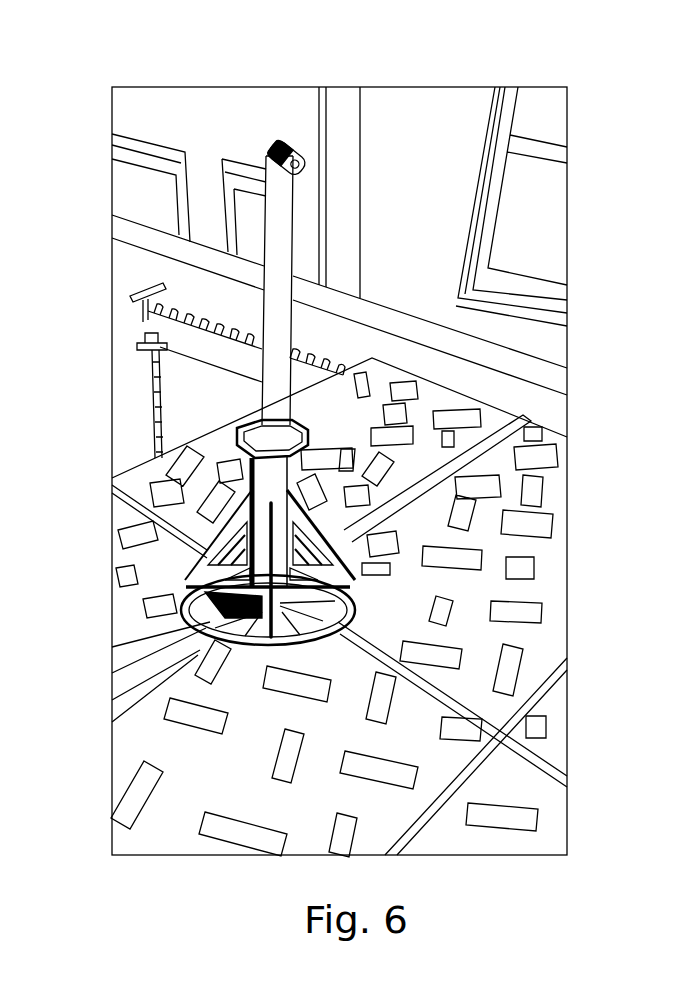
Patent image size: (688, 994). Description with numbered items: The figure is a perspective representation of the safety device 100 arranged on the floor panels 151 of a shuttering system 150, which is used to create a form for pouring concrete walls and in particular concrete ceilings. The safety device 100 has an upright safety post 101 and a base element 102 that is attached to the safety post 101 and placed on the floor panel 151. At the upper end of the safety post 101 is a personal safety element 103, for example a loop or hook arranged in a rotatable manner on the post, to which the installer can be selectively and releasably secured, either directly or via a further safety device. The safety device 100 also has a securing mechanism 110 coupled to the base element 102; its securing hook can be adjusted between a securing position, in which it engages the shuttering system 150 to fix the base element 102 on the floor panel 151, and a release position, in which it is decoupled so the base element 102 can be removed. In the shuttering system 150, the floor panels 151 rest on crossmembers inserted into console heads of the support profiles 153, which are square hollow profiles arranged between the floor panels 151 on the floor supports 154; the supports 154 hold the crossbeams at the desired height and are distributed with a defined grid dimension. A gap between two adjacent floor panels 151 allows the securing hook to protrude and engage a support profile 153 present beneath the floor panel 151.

The safety device 100 is at (333, 301).
The safety post 101 is at (280, 246).
The base element 102 is at (132, 646).
The personal safety element 103 is at (290, 146).
The securing mechanism 110 is at (187, 585).
The shuttering system 150 is at (578, 547).
The floor panel 151 is at (473, 418).
The support profile 153 is at (140, 285).
The floor support 154 is at (152, 396).